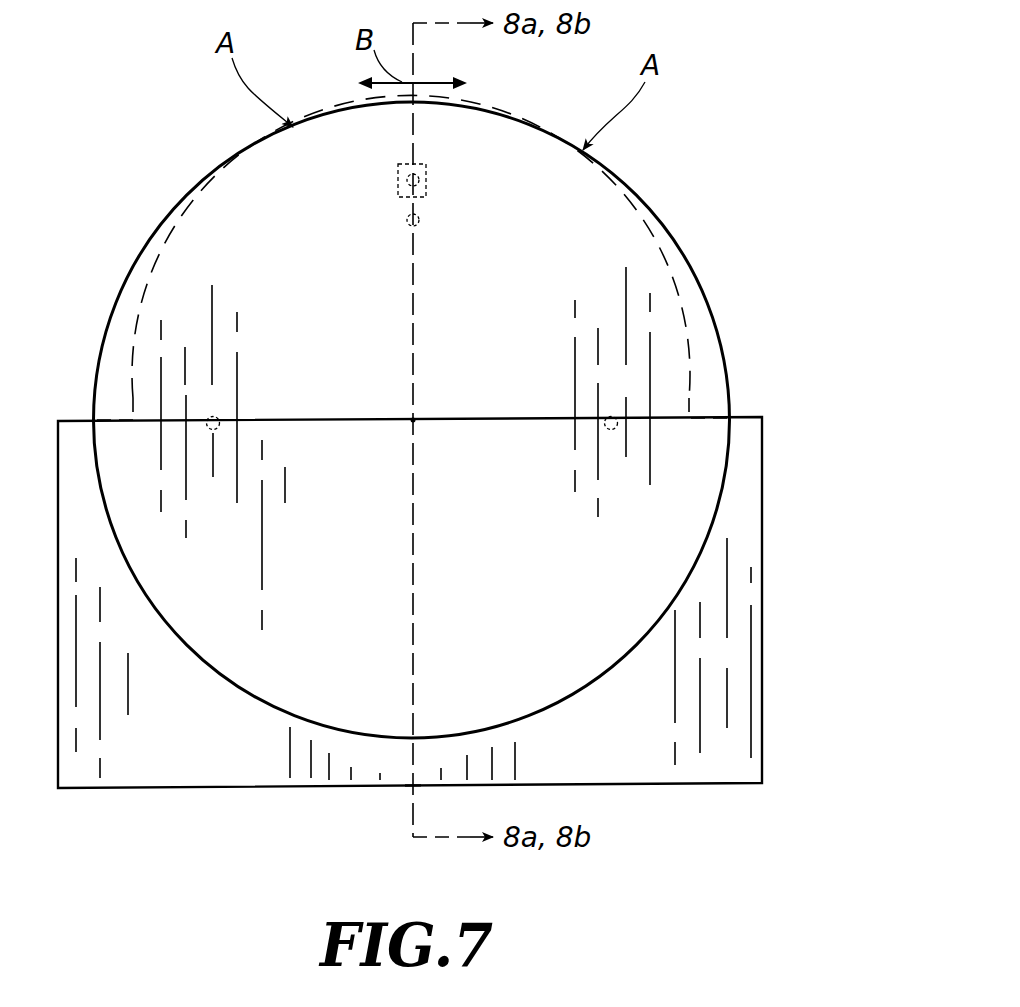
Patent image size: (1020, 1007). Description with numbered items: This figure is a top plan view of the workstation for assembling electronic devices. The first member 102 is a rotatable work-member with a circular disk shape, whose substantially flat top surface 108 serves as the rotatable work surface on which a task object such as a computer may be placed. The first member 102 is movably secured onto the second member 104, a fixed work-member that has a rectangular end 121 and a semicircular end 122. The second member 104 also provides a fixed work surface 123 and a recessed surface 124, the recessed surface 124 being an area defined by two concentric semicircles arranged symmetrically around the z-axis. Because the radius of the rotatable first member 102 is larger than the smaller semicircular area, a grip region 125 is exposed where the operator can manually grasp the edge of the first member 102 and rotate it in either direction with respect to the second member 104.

The first member 102 is at (641, 193).
The second member 104 is at (770, 535).
The top surface 108 is at (637, 313).
The rectangular end 121 is at (402, 797).
The semicircular end 122 is at (162, 142).
The fixed work surface 123 is at (727, 760).
The recessed surface 124 is at (653, 390).
The grip region 125 is at (505, 155).